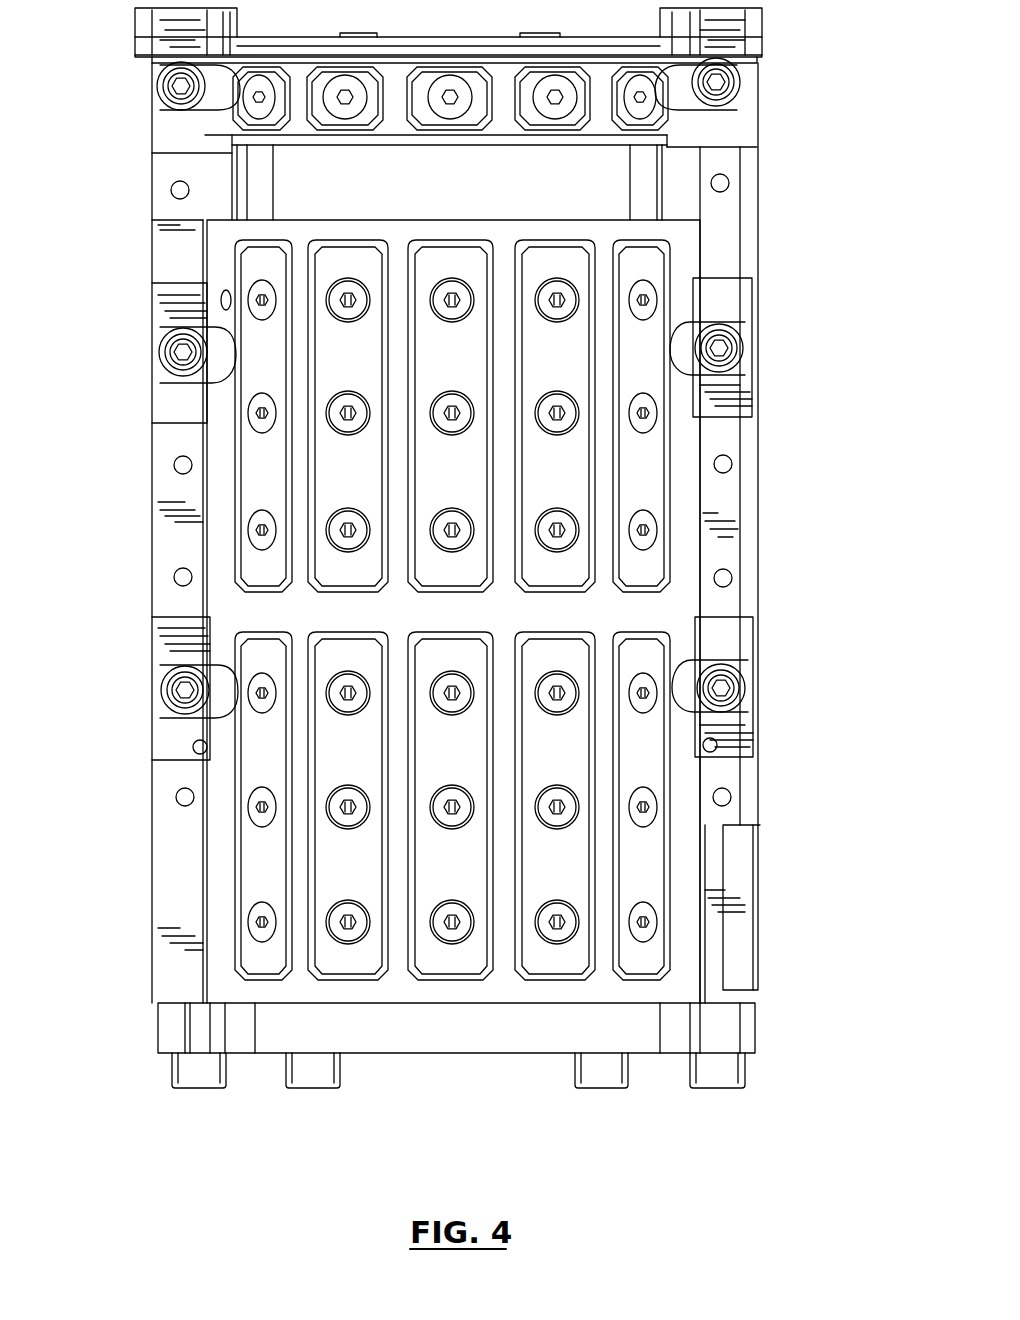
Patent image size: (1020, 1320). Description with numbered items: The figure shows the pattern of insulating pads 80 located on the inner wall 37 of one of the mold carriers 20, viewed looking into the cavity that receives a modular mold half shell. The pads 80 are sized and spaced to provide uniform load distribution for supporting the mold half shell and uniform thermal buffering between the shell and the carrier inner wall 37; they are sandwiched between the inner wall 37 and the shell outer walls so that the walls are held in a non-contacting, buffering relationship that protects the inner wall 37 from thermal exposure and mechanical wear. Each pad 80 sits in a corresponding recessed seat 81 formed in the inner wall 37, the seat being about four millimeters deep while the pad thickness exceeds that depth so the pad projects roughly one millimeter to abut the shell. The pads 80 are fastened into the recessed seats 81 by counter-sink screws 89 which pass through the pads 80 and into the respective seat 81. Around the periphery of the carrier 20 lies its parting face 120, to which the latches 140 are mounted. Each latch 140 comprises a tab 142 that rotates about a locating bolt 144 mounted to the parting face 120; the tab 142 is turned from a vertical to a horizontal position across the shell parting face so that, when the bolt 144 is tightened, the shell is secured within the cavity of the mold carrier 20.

The mold carrier 20 is at (412, 1093).
The carrier inner wall 37 is at (257, 612).
The insulating pad 80 is at (368, 110).
The recessed seat 81 is at (275, 112).
The counter-sink screw 89 is at (267, 508).
The parting face 120 is at (158, 262).
The latch 140 is at (178, 338).
The tab 142 is at (203, 384).
The locating bolt 144 is at (183, 352).